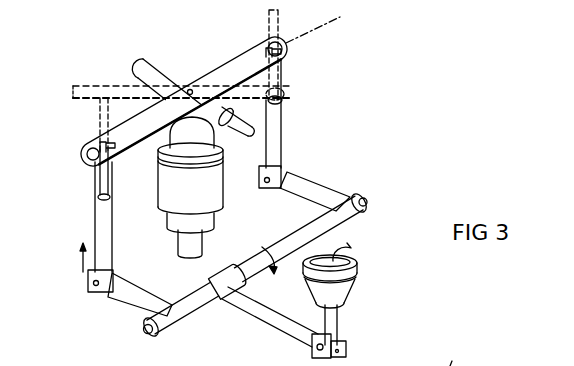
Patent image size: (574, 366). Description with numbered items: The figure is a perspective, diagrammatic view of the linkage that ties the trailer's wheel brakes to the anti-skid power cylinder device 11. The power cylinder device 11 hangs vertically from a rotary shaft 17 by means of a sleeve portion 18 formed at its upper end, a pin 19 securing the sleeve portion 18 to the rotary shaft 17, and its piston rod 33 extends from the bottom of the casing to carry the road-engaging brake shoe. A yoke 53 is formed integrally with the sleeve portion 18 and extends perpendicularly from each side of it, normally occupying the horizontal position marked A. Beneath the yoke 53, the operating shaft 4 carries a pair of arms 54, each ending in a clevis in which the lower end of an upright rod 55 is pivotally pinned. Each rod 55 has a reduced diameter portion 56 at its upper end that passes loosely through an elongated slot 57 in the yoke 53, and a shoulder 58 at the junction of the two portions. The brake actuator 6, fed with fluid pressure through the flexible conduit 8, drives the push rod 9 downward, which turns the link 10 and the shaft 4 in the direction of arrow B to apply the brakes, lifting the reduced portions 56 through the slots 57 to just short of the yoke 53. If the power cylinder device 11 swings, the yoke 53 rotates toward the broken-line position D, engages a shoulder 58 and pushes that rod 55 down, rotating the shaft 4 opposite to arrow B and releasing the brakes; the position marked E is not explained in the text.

The operating shaft 4 is at (192, 306).
The brake actuator 6 is at (344, 294).
The flexible conduit 8 is at (347, 250).
The push rod 9 is at (336, 326).
The link 10 is at (281, 322).
The power cylinder device 11 is at (224, 192).
The rotary shaft 17 is at (238, 131).
The sleeve portion 18 is at (160, 73).
The pin 19 is at (191, 92).
The piston rod 33 is at (201, 249).
The yoke 53 is at (242, 64).
The arm 54 is at (142, 305).
The upright rod 55 is at (96, 222).
The reduced diameter portion 56 is at (104, 178).
The elongated slot 57 is at (92, 146).
The shoulder 58 is at (112, 200).
The horizontal position of yoke A is at (313, 22).
The arrow indicating shaft rotation B is at (263, 250).
The brake releasing position line D is at (297, 94).
The axis E is at (458, 348).